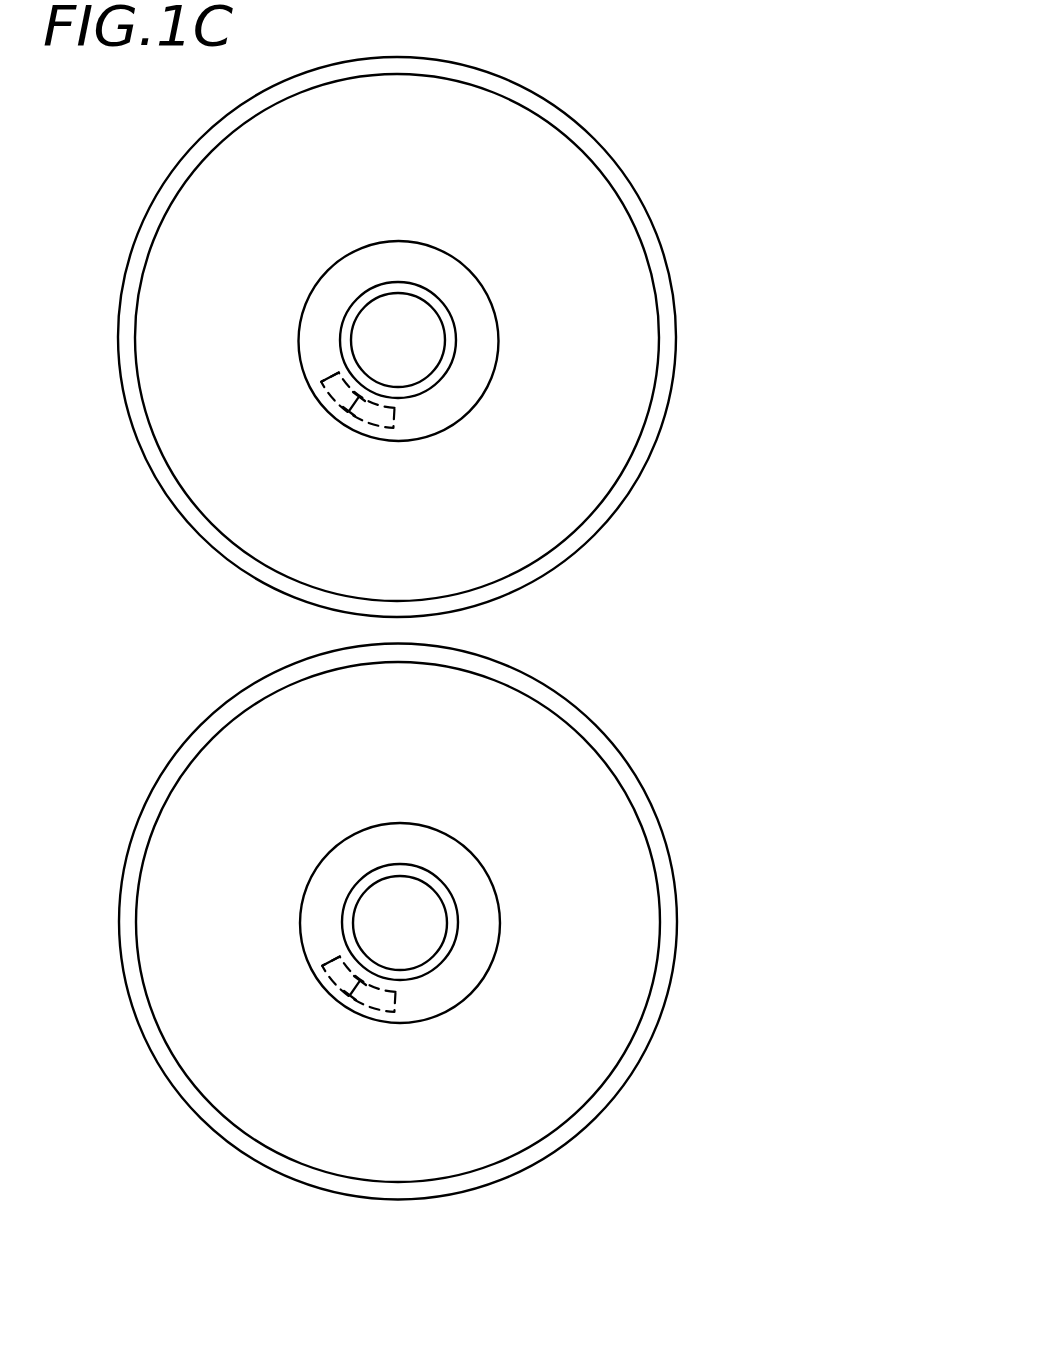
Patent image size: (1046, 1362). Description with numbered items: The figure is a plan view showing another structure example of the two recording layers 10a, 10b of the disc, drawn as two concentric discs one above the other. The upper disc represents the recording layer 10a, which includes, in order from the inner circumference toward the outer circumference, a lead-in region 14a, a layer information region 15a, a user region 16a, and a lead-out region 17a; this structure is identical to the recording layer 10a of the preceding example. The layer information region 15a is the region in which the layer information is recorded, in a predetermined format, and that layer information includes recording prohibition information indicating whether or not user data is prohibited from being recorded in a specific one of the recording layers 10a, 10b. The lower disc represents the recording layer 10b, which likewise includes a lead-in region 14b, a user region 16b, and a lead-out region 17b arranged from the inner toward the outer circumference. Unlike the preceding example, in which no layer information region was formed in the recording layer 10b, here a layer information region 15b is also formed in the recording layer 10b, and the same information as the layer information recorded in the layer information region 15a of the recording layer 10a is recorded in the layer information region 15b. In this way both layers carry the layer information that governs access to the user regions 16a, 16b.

The recording layer 10a is at (676, 314).
The recording layer 10b is at (470, 922).
The lead-in region 14a is at (455, 344).
The lead-in region 14b is at (537, 984).
The layer information region 15a is at (460, 390).
The layer information region 15b is at (508, 1018).
The user region 16a is at (529, 202).
The user region 16b is at (500, 858).
The lead-out region 17a is at (643, 232).
The lead-out region 17b is at (445, 922).